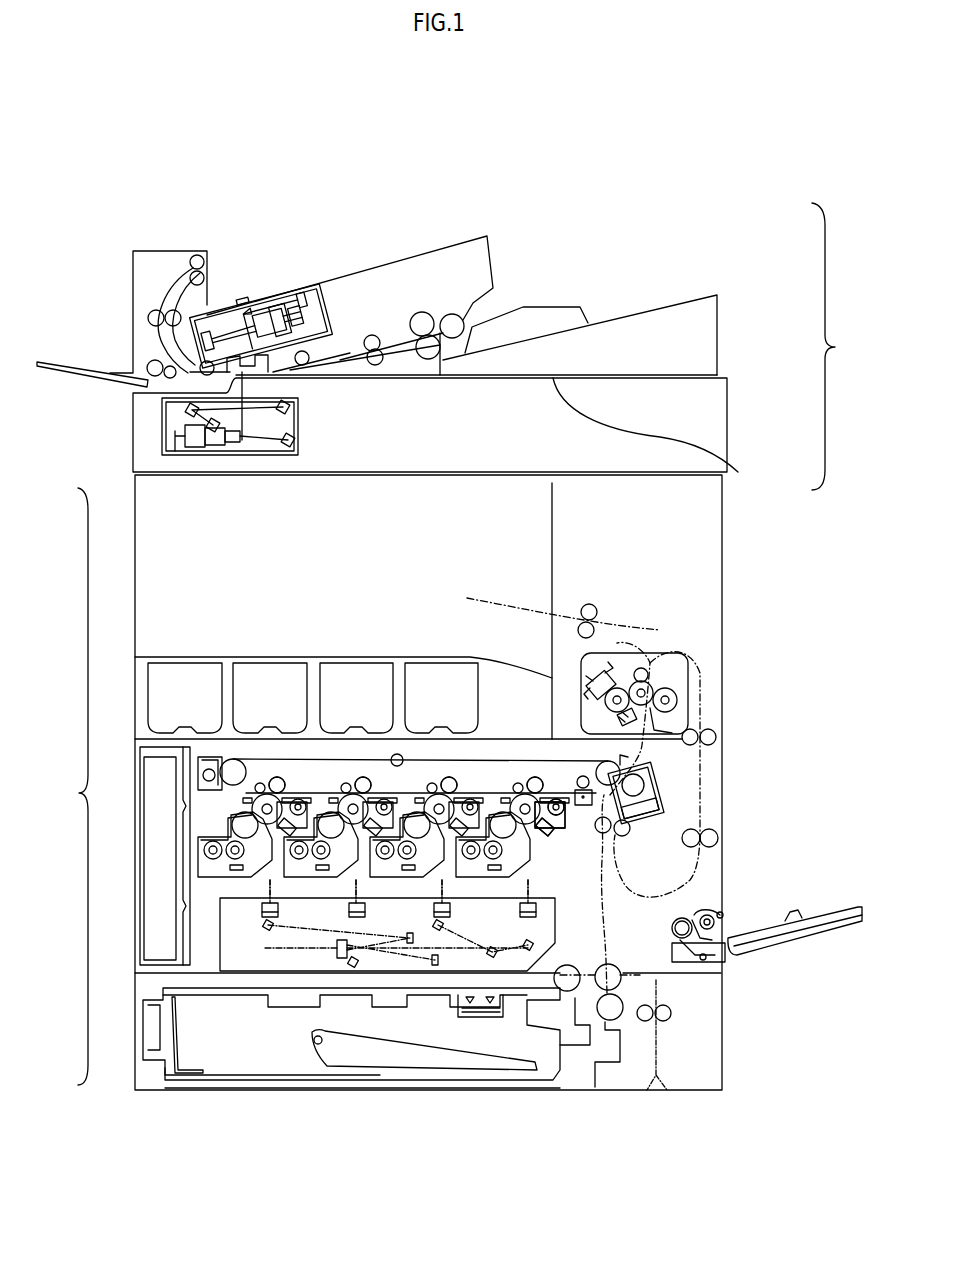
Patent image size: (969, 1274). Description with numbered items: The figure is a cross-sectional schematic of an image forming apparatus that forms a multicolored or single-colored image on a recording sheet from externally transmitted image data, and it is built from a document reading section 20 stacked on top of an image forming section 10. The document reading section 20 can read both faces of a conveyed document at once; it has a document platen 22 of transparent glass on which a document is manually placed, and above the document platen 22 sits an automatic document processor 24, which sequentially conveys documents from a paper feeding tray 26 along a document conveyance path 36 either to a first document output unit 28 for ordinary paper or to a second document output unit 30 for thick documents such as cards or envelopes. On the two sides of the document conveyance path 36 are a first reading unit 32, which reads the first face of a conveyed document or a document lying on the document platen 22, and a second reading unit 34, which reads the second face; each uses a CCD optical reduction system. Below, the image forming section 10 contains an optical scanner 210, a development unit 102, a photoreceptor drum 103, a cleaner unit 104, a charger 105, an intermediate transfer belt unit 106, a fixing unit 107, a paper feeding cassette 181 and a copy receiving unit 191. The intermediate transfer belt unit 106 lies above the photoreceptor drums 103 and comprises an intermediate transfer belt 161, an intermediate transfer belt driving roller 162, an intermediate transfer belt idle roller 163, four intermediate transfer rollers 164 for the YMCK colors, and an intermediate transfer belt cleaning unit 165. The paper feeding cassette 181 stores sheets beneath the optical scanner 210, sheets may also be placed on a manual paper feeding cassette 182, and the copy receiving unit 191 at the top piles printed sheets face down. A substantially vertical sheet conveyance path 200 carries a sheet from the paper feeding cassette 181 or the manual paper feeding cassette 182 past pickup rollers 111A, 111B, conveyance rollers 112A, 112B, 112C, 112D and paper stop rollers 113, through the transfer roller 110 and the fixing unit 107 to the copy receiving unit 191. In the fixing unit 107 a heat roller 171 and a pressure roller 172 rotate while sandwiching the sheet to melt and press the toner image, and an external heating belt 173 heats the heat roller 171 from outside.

The image forming section 10 is at (386, 782).
The document reading section 20 is at (837, 346).
The document platen 22 is at (445, 436).
The automatic document processor 24 is at (160, 238).
The paper feeding tray 26 is at (590, 308).
The first document output unit 28 is at (323, 268).
The second document output unit 30 is at (84, 367).
The first reading unit 32 is at (310, 415).
The second reading unit 34 is at (228, 316).
The document conveyance path 36 is at (357, 350).
The development unit 102 is at (524, 829).
The photoreceptor drum 103 is at (525, 862).
The cleaner unit 104 is at (568, 810).
The charger 105 is at (547, 843).
The intermediate transfer belt unit 106 is at (495, 755).
The fixing unit 107 is at (685, 673).
The transfer roller 110 is at (633, 785).
The pickup roller 111A is at (560, 967).
The pickup roller 111B is at (733, 923).
The conveyance roller 112A is at (613, 938).
The conveyance roller 112B is at (590, 603).
The conveyance roller 112C is at (720, 738).
The conveyance roller 112D is at (717, 833).
The paper stop rollers 113 is at (628, 833).
The intermediate transfer belt 161 is at (525, 755).
The intermediate transfer belt driving roller 162 is at (615, 767).
The intermediate transfer belt idle roller 163 is at (223, 763).
The intermediate transfer rollers 164 is at (278, 782).
The intermediate transfer belt cleaning unit 165 is at (205, 762).
The heat roller 171 is at (672, 688).
The pressure roller 172 is at (678, 705).
The external heating belt 173 is at (617, 677).
The paper feeding cassette 181 is at (387, 1053).
The manual paper feeding cassette 182 is at (825, 900).
The copy receiving unit 191 is at (357, 655).
The sheet conveyance path 200 is at (583, 795).
The optical scanner 210 is at (232, 937).